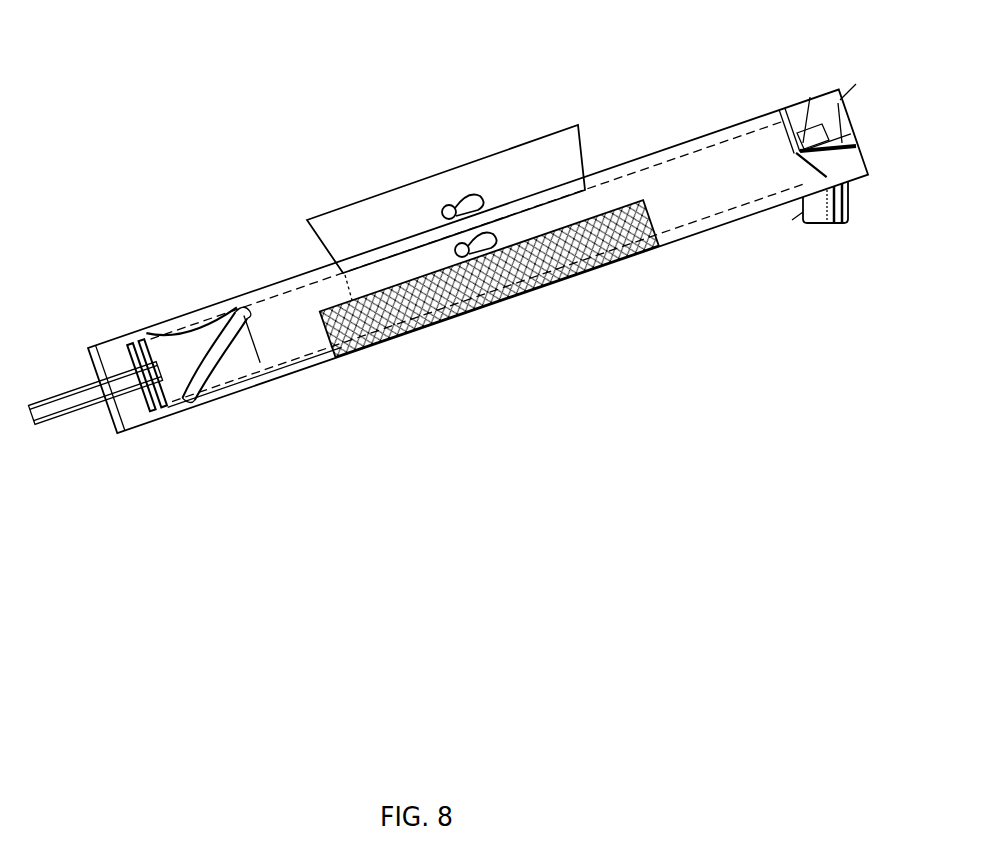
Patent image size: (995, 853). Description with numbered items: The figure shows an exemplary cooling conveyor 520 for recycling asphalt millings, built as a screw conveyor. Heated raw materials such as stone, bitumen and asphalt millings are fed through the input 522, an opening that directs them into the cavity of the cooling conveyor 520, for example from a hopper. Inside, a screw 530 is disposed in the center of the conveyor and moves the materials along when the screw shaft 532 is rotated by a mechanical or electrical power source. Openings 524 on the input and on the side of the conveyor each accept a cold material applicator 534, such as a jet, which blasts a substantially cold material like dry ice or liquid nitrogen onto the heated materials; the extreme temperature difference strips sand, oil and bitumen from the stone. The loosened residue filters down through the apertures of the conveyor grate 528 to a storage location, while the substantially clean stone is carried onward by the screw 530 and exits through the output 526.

The cooling conveyor 520 is at (276, 44).
The input 522 is at (577, 157).
The opening 524 is at (425, 210).
The output 526 is at (824, 230).
The conveyor grate 528 is at (504, 293).
The screw 530 is at (223, 382).
The screw shaft 532 is at (57, 382).
The cold material applicator 534 is at (495, 209).